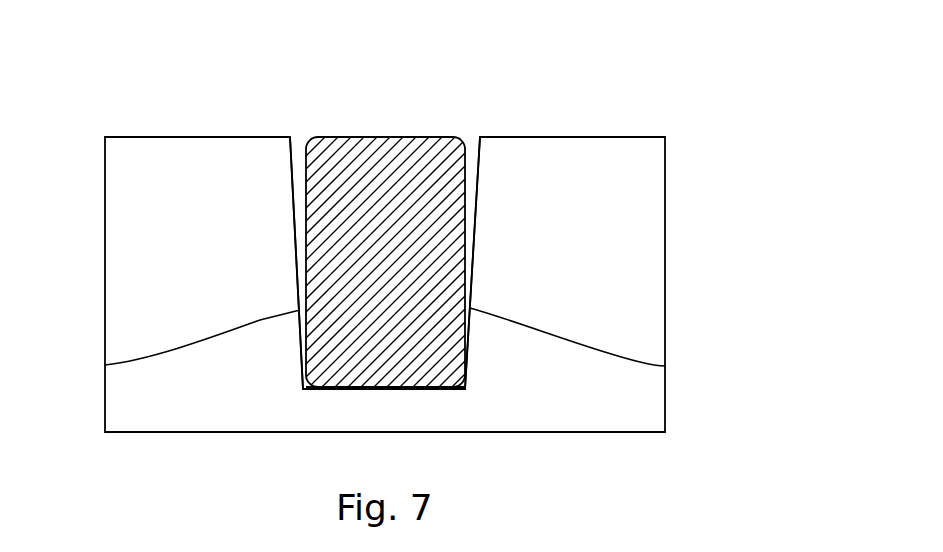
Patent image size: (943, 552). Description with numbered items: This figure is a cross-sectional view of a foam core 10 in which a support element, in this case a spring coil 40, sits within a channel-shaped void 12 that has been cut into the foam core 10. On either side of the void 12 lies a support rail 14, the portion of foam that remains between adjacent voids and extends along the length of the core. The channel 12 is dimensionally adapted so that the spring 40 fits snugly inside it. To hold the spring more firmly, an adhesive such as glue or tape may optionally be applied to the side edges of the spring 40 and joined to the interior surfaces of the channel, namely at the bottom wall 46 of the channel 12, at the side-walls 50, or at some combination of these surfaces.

The foam core 10 is at (628, 105).
The void 12 is at (298, 152).
The support rail 14 is at (655, 202).
The spring coil 40 is at (403, 152).
The bottom wall 46 is at (440, 388).
The side-walls 50 is at (105, 365).